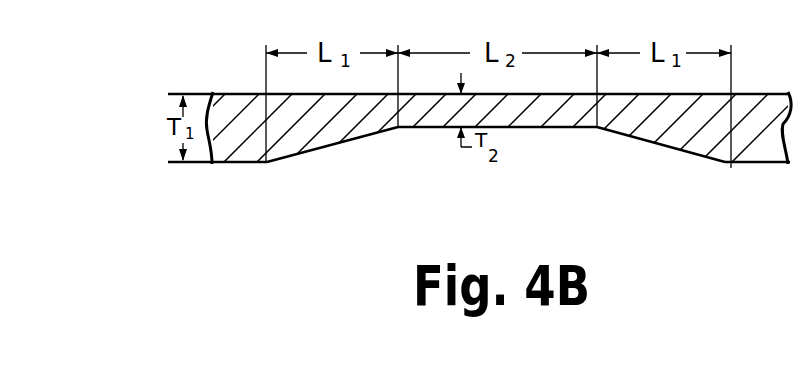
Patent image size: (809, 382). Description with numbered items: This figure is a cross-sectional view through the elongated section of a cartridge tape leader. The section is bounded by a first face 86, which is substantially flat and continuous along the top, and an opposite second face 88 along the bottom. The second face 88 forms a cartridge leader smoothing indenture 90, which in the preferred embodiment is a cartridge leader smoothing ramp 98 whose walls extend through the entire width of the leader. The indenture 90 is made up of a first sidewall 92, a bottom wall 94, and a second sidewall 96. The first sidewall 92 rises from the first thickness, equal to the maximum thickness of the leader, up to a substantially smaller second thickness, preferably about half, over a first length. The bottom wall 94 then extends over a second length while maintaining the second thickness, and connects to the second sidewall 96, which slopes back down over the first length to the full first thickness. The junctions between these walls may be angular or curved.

The first face 86 is at (766, 93).
The second face 88 is at (766, 163).
The cartridge leader smoothing indenture 90 is at (477, 168).
The first sidewall 92 is at (333, 145).
The bottom wall 94 is at (545, 128).
The second sidewall 96 is at (662, 145).
The cartridge leader smoothing ramp 98 is at (496, 182).